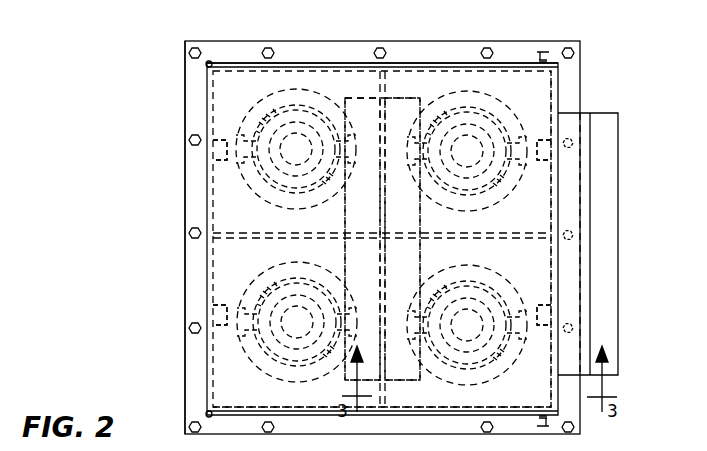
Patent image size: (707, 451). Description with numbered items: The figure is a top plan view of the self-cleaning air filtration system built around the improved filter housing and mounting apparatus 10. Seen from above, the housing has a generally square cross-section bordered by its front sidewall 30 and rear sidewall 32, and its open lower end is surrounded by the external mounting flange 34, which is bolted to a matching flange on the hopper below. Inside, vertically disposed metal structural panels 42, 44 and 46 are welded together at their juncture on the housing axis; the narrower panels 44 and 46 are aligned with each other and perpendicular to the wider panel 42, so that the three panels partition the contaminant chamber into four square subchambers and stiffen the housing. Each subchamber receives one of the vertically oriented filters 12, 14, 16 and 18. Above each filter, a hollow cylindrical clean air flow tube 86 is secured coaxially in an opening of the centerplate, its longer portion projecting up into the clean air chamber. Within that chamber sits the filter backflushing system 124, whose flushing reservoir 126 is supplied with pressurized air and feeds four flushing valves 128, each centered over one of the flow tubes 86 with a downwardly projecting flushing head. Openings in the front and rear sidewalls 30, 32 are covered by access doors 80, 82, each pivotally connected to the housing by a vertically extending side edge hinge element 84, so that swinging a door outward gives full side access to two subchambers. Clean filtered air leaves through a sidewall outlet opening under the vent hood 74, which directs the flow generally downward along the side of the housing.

The filter housing and mounting apparatus 10 is at (135, 246).
The filter 12 is at (224, 116).
The filter 14 is at (526, 93).
The filter 16 is at (226, 355).
The filter 18 is at (534, 292).
The front sidewall 30 is at (272, 406).
The rear sidewall 32 is at (288, 63).
The external mounting flange 34 is at (188, 184).
The structural panel 42 is at (435, 209).
The structural panel 44 is at (376, 174).
The structural panel 46 is at (380, 322).
The vent hood 74 is at (618, 170).
The access door 80 is at (493, 410).
The access door 82 is at (318, 63).
The side edge hinge element 84 is at (209, 62).
The clean air flow tube 86 is at (250, 214).
The filter backflushing system 124 is at (393, 70).
The flushing reservoir 126 is at (420, 268).
The flushing valve 128 is at (308, 118).